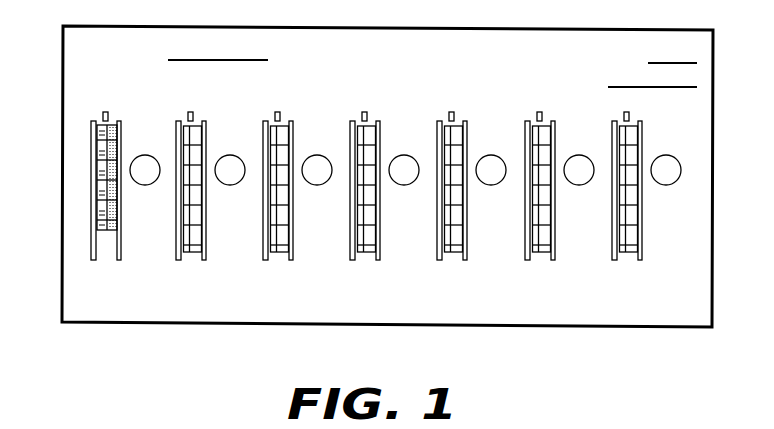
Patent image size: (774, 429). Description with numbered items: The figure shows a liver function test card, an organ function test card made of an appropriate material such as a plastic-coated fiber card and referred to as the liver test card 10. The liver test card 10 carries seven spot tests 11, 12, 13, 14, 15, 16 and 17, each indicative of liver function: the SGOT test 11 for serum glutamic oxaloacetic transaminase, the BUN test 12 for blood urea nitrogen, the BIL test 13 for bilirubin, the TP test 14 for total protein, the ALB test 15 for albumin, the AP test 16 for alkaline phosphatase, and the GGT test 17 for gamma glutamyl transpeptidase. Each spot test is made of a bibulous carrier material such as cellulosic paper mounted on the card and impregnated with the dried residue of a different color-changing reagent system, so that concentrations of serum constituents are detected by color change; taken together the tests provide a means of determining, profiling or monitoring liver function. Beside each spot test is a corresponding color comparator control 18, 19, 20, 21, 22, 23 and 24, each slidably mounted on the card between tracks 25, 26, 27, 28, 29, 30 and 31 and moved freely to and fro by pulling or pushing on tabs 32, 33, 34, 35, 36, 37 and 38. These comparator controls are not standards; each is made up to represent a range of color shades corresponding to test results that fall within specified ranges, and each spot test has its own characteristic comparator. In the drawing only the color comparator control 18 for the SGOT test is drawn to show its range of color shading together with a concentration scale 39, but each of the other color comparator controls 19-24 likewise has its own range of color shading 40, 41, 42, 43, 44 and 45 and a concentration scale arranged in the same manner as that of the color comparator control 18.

The liver test card 10 is at (713, 173).
The SGOT spot test 11 is at (143, 155).
The BUN spot test 12 is at (228, 155).
The BIL spot test 13 is at (315, 155).
The TP spot test 14 is at (402, 155).
The ALB spot test 15 is at (489, 155).
The AP spot test 16 is at (577, 155).
The GGT spot test 17 is at (664, 155).
The color comparator control 18 is at (113, 232).
The color comparator control 19 is at (195, 242).
The color comparator control 20 is at (282, 242).
The color comparator control 21 is at (369, 242).
The color comparator control 22 is at (456, 242).
The color comparator control 23 is at (544, 242).
The color comparator control 24 is at (631, 242).
The track 25 is at (96, 260).
The track 26 is at (181, 260).
The track 27 is at (268, 260).
The track 28 is at (355, 260).
The track 29 is at (442, 260).
The track 30 is at (530, 260).
The track 31 is at (617, 260).
The tab 32 is at (107, 112).
The tab 33 is at (192, 112).
The tab 34 is at (279, 112).
The tab 35 is at (366, 112).
The tab 36 is at (453, 112).
The tab 37 is at (544, 113).
The tab 38 is at (631, 113).
The concentration scale 39 is at (95, 187).
The range of color shading 40 is at (201, 187).
The range of color shading 41 is at (288, 187).
The range of color shading 42 is at (375, 187).
The range of color shading 43 is at (462, 187).
The range of color shading 44 is at (550, 197).
The range of color shading 45 is at (637, 197).